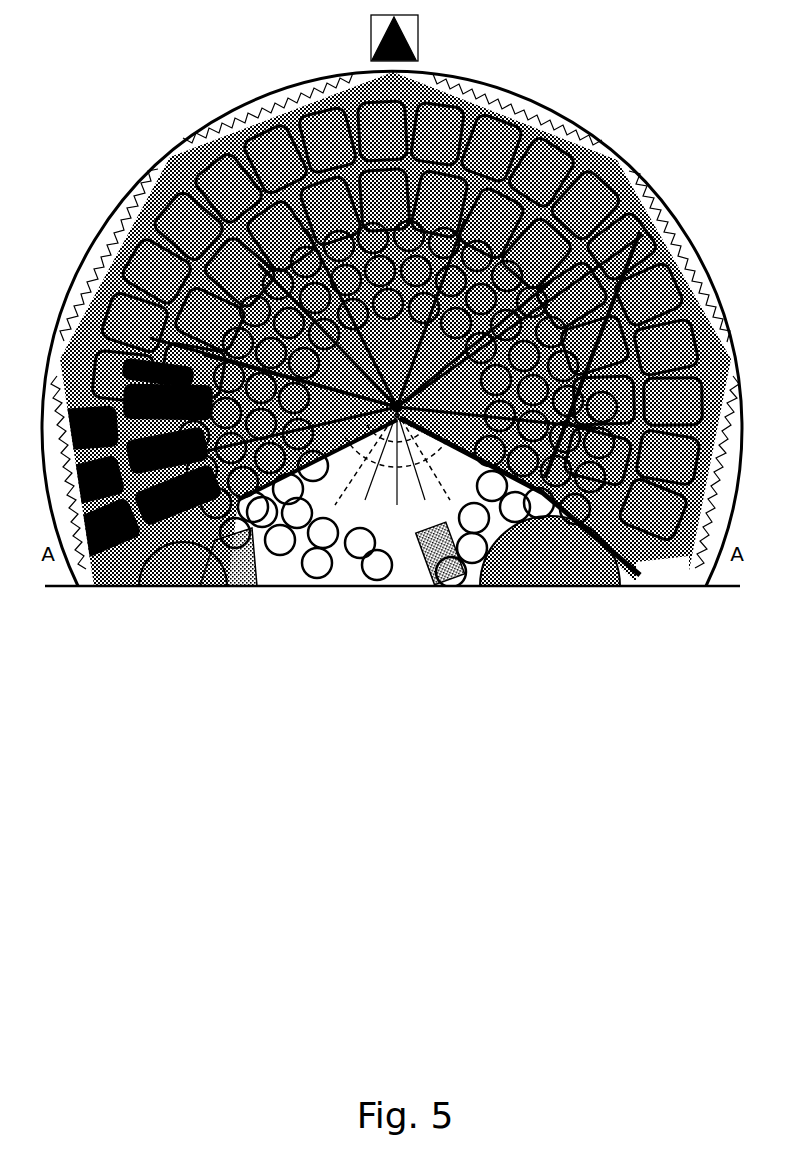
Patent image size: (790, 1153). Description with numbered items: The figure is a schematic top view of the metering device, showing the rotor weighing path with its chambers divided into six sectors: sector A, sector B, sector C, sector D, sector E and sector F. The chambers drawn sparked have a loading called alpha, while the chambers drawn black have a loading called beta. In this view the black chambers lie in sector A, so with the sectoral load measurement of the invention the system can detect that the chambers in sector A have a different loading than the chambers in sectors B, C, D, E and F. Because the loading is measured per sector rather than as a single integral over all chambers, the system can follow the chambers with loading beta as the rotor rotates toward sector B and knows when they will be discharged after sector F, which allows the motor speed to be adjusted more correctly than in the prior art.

The sector A is at (141, 458).
The sector B is at (185, 296).
The sector C is at (301, 187).
The sector D is at (493, 181).
The sector E is at (599, 272).
The sector F is at (632, 459).